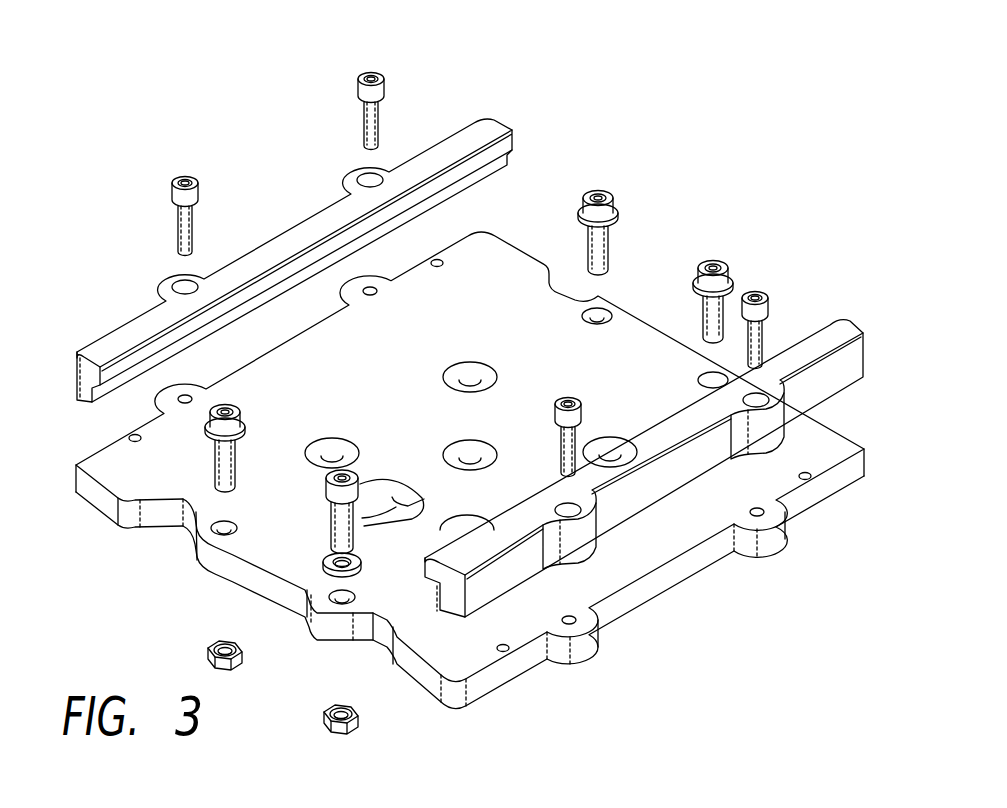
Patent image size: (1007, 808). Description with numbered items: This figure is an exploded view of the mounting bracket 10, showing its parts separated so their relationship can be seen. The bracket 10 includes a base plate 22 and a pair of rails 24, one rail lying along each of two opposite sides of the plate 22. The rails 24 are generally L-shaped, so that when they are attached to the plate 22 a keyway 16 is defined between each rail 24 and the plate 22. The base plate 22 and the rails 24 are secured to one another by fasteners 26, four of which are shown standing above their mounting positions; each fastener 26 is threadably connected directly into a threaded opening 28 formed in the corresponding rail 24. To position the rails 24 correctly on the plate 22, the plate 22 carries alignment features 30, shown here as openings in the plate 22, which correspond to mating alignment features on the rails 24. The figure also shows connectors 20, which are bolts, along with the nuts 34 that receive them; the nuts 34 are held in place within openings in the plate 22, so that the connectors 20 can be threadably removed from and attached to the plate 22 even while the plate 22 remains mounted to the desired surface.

The bracket 10 is at (198, 136).
The keyway 16 is at (88, 392).
The connector 20 is at (607, 193).
The base plate 22 is at (523, 333).
The rail 24 is at (467, 138).
The fastener 26 is at (358, 82).
The threaded opening 28 is at (378, 291).
The alignment feature 30 is at (437, 260).
The nut 34 is at (208, 642).